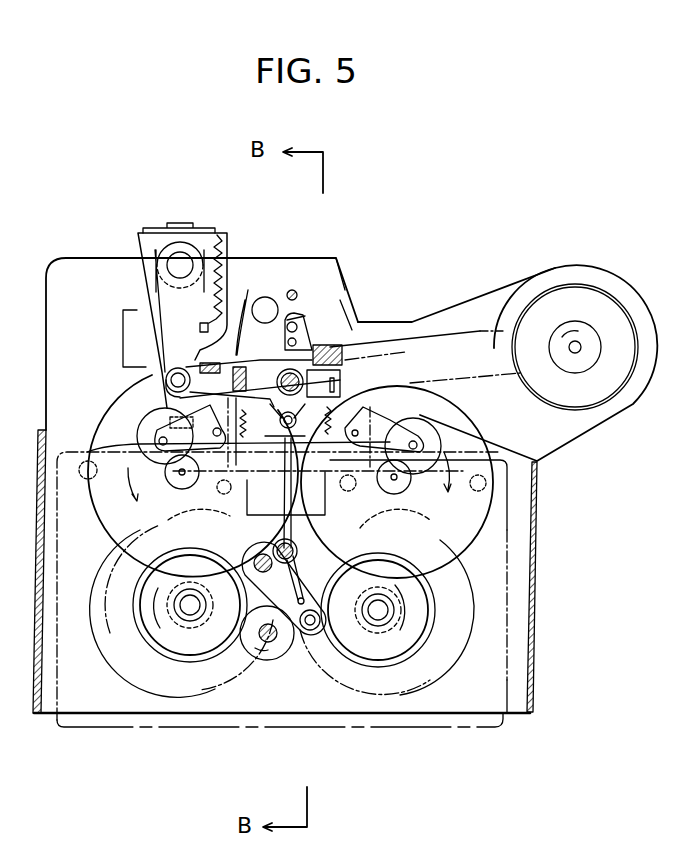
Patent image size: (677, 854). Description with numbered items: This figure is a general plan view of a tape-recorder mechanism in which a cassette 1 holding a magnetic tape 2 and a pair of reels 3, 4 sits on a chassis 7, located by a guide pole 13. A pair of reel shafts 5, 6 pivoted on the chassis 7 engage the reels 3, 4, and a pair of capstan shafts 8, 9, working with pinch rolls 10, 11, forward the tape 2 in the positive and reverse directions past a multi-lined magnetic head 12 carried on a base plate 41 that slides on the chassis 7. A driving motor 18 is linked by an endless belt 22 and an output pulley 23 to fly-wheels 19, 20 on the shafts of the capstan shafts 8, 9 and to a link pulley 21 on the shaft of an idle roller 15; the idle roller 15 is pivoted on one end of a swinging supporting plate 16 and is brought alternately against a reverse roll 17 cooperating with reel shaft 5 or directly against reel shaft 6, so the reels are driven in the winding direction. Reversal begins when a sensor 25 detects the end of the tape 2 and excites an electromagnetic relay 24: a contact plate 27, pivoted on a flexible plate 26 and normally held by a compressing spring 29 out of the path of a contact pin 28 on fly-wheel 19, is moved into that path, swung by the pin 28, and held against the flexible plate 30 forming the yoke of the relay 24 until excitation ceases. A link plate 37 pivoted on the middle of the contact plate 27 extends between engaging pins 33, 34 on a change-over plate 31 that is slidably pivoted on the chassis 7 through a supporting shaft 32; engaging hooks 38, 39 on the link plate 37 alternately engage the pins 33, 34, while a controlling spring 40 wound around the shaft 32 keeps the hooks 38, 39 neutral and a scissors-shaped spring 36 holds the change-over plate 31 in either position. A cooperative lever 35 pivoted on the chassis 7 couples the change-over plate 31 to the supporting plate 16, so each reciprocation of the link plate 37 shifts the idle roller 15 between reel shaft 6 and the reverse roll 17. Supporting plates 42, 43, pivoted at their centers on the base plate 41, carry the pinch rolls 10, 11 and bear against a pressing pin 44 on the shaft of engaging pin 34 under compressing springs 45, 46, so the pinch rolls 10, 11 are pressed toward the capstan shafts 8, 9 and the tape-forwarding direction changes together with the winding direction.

The cassette 1 is at (440, 728).
The magnetic tape 2 is at (480, 547).
The reel 3 is at (163, 690).
The reel 4 is at (443, 670).
The reel shaft 5 is at (187, 617).
The reel shaft 6 is at (407, 613).
The chassis 7 is at (536, 643).
The capstan shaft 8 is at (183, 475).
The capstan shaft 9 is at (397, 477).
The pinch roll 10 is at (135, 412).
The pinch roll 11 is at (497, 417).
The multi-lined magnetic head 12 is at (287, 493).
The guide pole 13 is at (212, 512).
The idle roller 15 is at (298, 640).
The swinging supporting plate 16 is at (283, 670).
The reverse roll 17 is at (280, 655).
The driving motor 18 is at (568, 298).
The fly-wheel 19 is at (102, 443).
The fly-wheel 20 is at (540, 452).
The link pulley 21 is at (330, 657).
The endless belt 22 is at (503, 330).
The output pulley 23 is at (593, 338).
The electromagnetic relay 24 is at (155, 268).
The sensor 25 is at (480, 480).
The flexible plate 26 is at (200, 243).
The contact plate 27 is at (173, 315).
The contact pin 28 is at (217, 481).
The compressing spring 29 is at (226, 262).
The flexible plate (yoke) 30 is at (122, 338).
The change-over plate 31 is at (337, 263).
The supporting shaft 32 is at (347, 358).
The engaging pin 33 is at (330, 313).
The engaging pin 34 is at (262, 455).
The cooperative lever 35 is at (340, 513).
The scissors-shaped spring 36 is at (273, 297).
The link plate 37 is at (249, 309).
The engaging hook 38 is at (330, 327).
The engaging hook 39 is at (407, 380).
The controlling spring 40 is at (260, 372).
The base plate 41 is at (335, 343).
The supporting plate 42 is at (176, 420).
The supporting plate 43 is at (437, 413).
The pressing pin 44 is at (226, 494).
The compressing spring 45 is at (200, 362).
The compressing spring 46 is at (372, 422).